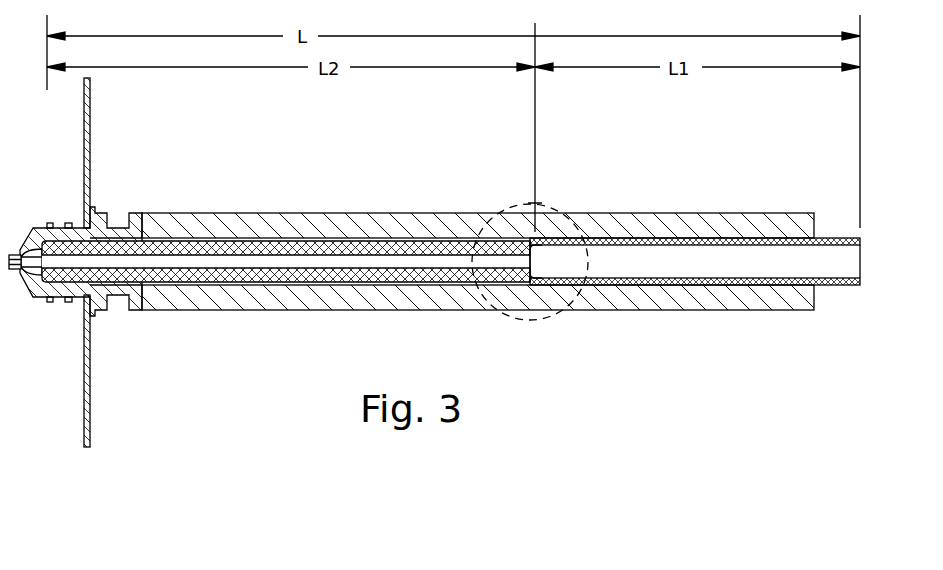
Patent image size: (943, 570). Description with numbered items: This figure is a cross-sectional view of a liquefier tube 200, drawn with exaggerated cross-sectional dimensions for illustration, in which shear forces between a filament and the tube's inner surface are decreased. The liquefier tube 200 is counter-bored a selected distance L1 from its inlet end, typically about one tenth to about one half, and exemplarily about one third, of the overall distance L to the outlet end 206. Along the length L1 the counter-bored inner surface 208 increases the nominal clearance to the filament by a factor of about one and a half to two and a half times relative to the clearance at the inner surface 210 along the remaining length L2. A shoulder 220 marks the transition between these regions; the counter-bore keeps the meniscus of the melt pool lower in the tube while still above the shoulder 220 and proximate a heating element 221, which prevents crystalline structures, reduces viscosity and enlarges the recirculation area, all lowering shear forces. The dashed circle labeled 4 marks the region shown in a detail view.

The liquefier tube 200 is at (434, 262).
The outlet end 206 is at (30, 299).
The counter-bored inner surface 208 is at (712, 279).
The inner surface 210 is at (298, 267).
The shoulder 220 is at (540, 240).
The heating element 221 is at (678, 218).
The detail region of FIG. 4 is at (553, 322).